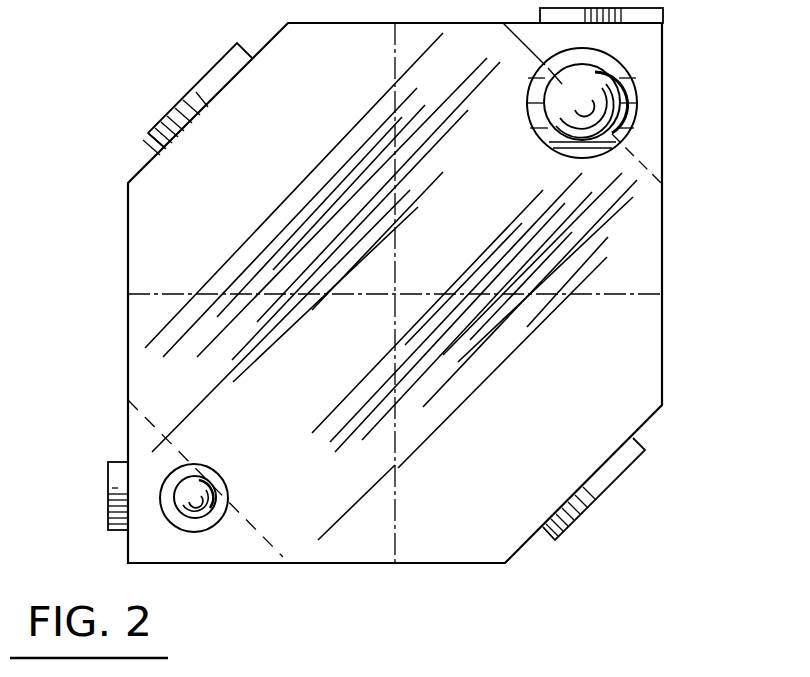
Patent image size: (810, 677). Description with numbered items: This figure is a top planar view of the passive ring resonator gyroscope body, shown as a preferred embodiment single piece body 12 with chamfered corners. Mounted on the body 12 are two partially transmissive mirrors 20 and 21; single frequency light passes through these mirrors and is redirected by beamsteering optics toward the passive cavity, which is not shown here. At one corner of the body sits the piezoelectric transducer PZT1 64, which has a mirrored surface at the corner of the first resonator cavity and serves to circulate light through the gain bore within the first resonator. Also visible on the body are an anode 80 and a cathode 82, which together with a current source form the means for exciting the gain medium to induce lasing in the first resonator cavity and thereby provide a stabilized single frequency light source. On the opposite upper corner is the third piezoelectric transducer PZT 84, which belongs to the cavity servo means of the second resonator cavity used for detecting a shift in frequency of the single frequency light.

The single piece body 12 is at (450, 387).
The partially transmissive mirror 20 is at (628, 8).
The partially transmissive mirror 21 is at (108, 510).
The PZT1 64 is at (607, 478).
The anode 80 is at (213, 514).
The cathode 82 is at (576, 110).
The PZT 3 84 is at (212, 88).